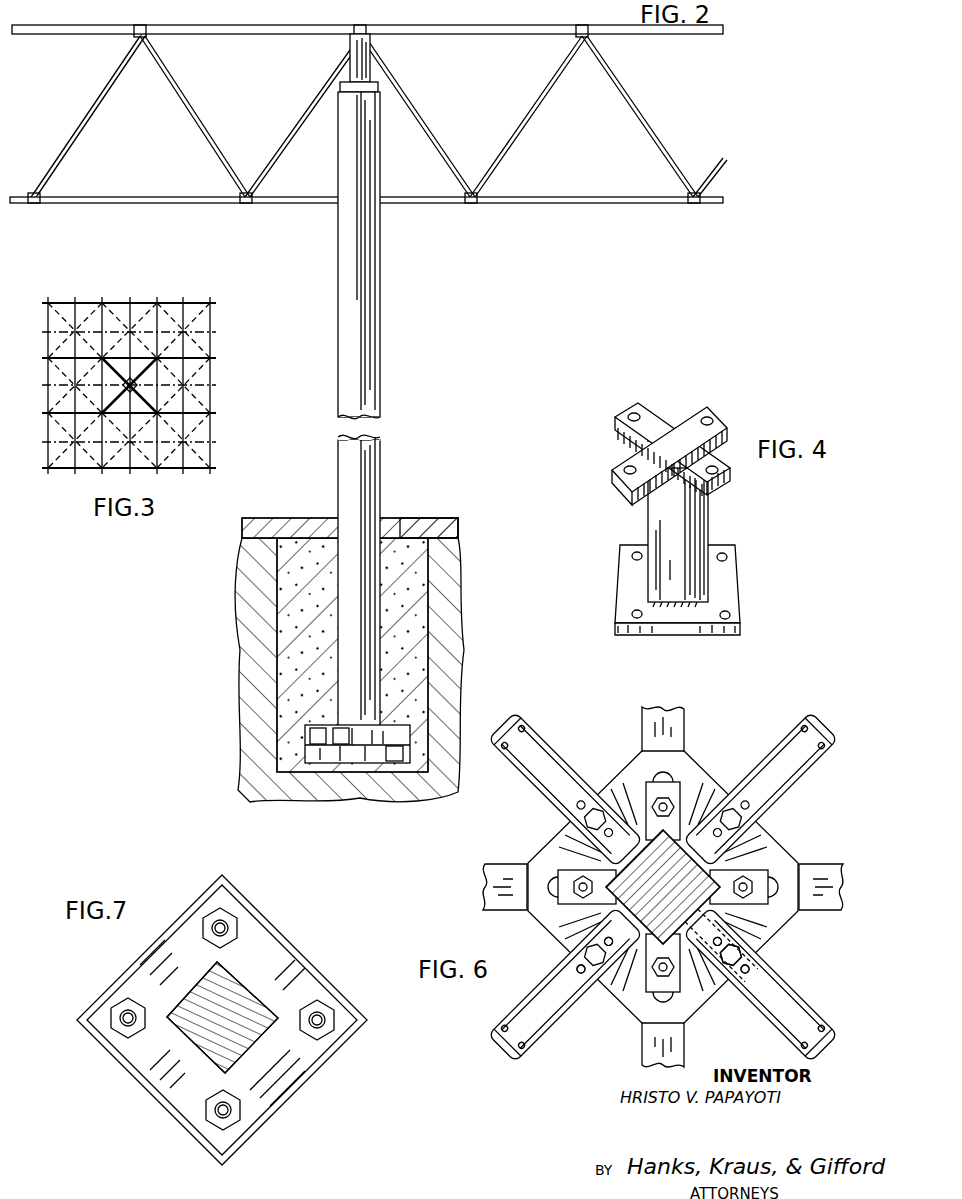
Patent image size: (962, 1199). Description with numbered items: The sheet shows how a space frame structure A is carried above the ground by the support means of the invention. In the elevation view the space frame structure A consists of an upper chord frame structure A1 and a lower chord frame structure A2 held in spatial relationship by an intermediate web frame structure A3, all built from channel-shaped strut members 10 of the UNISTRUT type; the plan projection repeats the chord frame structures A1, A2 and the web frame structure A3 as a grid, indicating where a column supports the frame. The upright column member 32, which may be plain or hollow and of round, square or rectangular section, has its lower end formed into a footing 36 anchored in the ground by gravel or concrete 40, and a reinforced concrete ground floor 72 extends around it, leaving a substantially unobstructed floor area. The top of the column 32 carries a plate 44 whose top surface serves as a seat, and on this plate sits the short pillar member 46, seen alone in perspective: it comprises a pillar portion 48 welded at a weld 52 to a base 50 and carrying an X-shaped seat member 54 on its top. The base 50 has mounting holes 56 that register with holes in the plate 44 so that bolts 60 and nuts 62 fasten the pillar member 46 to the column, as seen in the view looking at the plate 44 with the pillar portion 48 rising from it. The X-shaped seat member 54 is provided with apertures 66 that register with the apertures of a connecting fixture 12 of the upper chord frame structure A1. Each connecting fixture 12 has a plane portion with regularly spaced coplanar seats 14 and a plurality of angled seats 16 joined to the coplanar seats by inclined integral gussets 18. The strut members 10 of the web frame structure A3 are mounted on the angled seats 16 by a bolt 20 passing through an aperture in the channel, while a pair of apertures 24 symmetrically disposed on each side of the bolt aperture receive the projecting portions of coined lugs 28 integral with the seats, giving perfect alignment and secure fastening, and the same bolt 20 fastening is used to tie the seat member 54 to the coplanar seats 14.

In FIG. 2, the strut member 10 is at (78, 52).
In FIG. 6, the strut member 10 is at (642, 720).
In FIG. 2, the connecting fixture 12 is at (578, 40).
In FIG. 6, the connecting fixture 12 is at (639, 1006).
In FIG. 6, the coplanar seat 14 is at (661, 778).
In FIG. 6, the angled seat 16 is at (776, 826).
In FIG. 6, the gusset 18 is at (778, 841).
In FIG. 6, the bolt 20 is at (742, 948).
In FIG. 6, the aperture 24 is at (770, 926).
In FIG. 2, the coined lug 28 is at (402, 736).
In FIG. 6, the coined lug 28 is at (583, 966).
In FIG. 2, the upright column member 32 is at (383, 362).
In FIG. 2, the footing 36 is at (455, 591).
In FIG. 2, the concrete 40 is at (312, 556).
In FIG. 7, the plate 44 is at (310, 966).
In FIG. 2, the short pillar member 46 is at (371, 72).
In FIG. 4, the short pillar member 46 is at (719, 527).
In FIG. 4, the pillar portion 48 is at (700, 545).
In FIG. 6, the pillar portion 48 is at (765, 870).
In FIG. 7, the pillar portion 48 is at (248, 1003).
In FIG. 4, the base 50 is at (732, 590).
In FIG. 7, the base 50 is at (262, 956).
In FIG. 4, the weld 52 is at (680, 605).
In FIG. 4, the X-shaped seat member 54 is at (700, 414).
In FIG. 6, the X-shaped seat member 54 is at (590, 870).
In FIG. 4, the mounting hole 56 is at (723, 621).
In FIG. 7, the bolt 60 is at (138, 1018).
In FIG. 7, the nut 62 is at (137, 1028).
In FIG. 4, the aperture 66 is at (714, 420).
In FIG. 2, the ground floor 72 is at (425, 531).
In FIG. 2, the space frame structure A is at (329, 17).
In FIG. 3, the upper chord frame structure A1 is at (200, 440).
In FIG. 6, the upper chord frame structure A1 is at (692, 736).
In FIG. 2, the lower chord frame structure A2 is at (597, 214).
In FIG. 3, the lower chord frame structure A2 is at (205, 358).
In FIG. 2, the web frame structure A3 is at (626, 134).
In FIG. 3, the web frame structure A3 is at (201, 327).
In FIG. 6, the web frame structure A3 is at (767, 750).